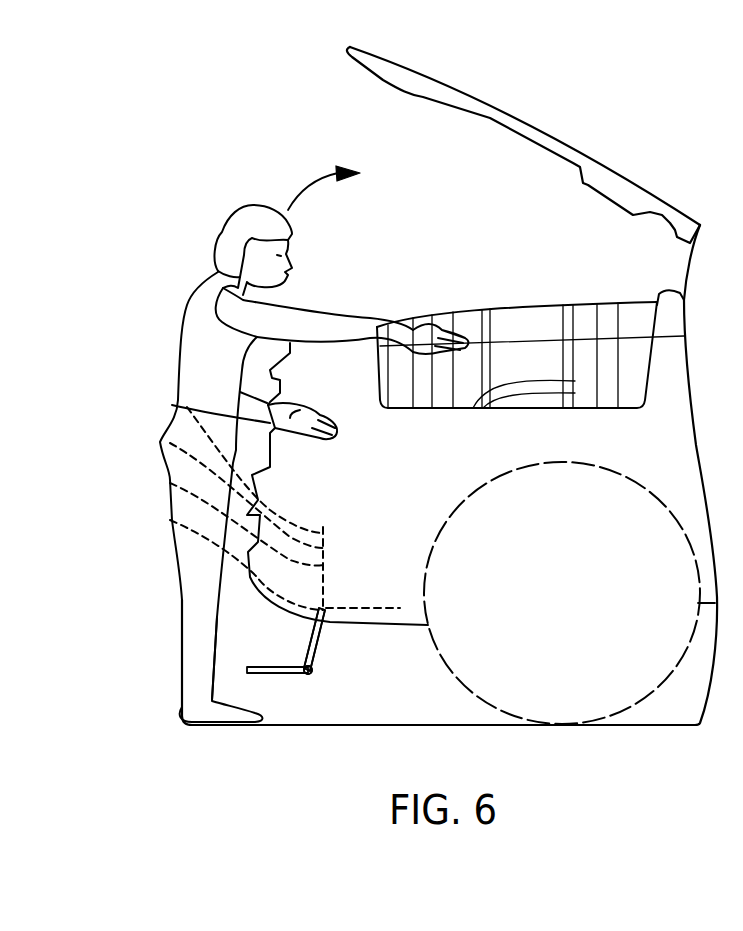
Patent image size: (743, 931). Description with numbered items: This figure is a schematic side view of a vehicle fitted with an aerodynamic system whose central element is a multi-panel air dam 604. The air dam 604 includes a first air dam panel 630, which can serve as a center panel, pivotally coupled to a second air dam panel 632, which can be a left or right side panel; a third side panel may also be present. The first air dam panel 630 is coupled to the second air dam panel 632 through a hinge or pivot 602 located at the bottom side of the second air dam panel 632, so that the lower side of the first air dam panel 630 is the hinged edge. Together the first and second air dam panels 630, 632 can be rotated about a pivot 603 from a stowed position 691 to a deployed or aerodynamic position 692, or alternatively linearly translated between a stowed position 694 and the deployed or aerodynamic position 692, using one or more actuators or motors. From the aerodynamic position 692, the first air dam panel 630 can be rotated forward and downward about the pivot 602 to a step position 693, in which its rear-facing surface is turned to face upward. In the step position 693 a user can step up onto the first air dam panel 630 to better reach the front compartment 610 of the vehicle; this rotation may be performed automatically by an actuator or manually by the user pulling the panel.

The front compartment 610 is at (511, 324).
The stowed position 694 is at (174, 403).
The first air dam panel 630 is at (170, 443).
The second air dam panel 632 is at (170, 483).
The pivot 603 is at (172, 519).
The air dam 604 is at (226, 630).
The stowed position 691 is at (398, 607).
The deployed or aerodynamic position 692 is at (320, 657).
The step position 693 is at (257, 675).
The hinge or pivot 602 is at (310, 675).